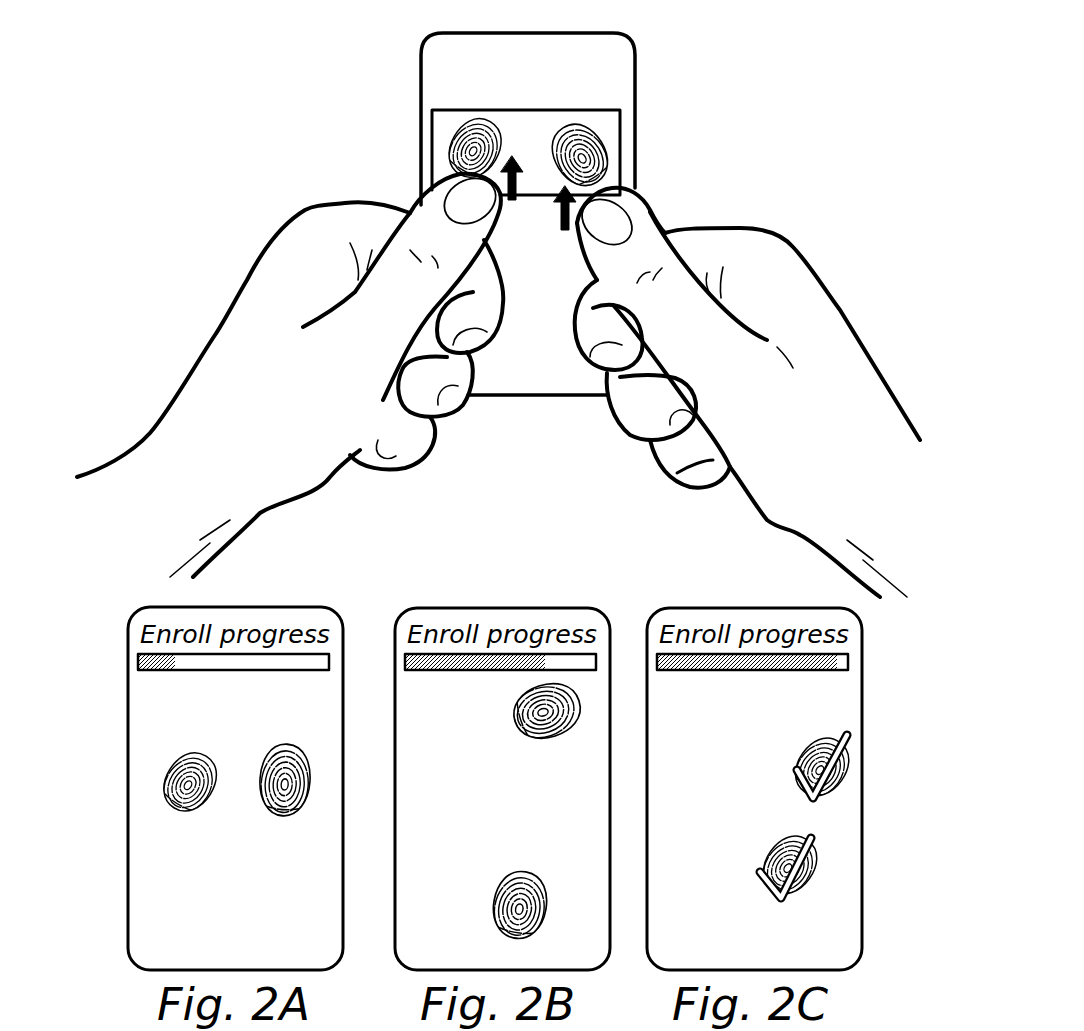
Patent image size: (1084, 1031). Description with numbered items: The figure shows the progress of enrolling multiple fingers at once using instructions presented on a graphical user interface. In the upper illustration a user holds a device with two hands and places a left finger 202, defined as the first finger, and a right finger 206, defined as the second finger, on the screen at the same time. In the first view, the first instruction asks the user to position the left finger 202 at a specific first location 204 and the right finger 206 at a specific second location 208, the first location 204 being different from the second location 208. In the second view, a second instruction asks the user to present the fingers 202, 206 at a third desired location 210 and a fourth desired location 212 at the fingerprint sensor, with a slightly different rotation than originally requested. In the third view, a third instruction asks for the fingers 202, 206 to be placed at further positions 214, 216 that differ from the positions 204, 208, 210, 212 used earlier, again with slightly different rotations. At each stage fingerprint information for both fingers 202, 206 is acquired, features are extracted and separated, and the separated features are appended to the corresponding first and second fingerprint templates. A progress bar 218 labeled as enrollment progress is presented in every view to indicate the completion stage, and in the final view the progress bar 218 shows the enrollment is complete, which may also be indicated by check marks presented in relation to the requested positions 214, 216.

In FIG. 2A, the left finger 202 is at (466, 197).
In FIG. 2A, the right finger 206 is at (612, 221).
In FIG. 2A, the first location 204 is at (180, 783).
In FIG. 2A, the second location 208 is at (277, 812).
In FIG. 2B, the third desired location 210 is at (512, 700).
In FIG. 2B, the fourth desired location 212 is at (518, 876).
In FIG. 2C, the requested position 214 is at (843, 773).
In FIG. 2C, the requested position 216 is at (813, 870).
In FIG. 2A, the progress bar 218 is at (330, 660).
In FIG. 2B, the progress bar 218 is at (597, 660).
In FIG. 2C, the progress bar 218 is at (850, 660).